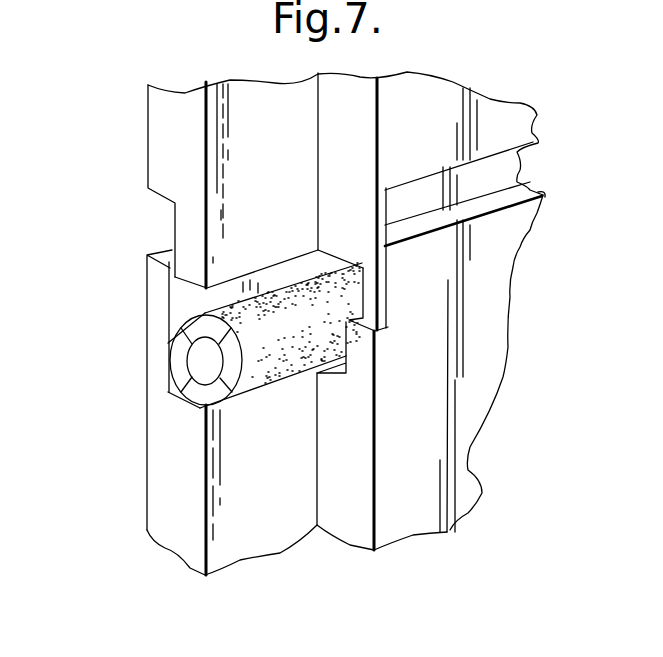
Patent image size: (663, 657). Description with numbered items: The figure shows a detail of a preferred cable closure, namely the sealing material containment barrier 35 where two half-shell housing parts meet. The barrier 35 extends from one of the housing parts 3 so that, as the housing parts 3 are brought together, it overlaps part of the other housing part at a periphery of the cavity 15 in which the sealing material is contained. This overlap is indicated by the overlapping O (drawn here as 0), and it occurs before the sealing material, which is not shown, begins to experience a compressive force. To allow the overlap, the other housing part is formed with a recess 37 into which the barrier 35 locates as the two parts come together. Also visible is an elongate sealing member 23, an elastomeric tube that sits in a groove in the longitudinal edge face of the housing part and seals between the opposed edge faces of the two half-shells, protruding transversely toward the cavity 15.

The overlapping 0 is at (165, 242).
The housing part 3 is at (445, 100).
The cavity 15 is at (253, 520).
The elongate sealing member 23 is at (180, 358).
The sealing material containment barrier 35 is at (352, 230).
The recess 37 is at (193, 302).